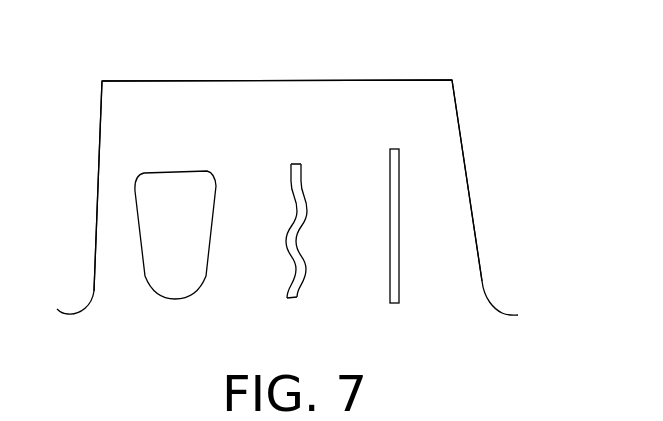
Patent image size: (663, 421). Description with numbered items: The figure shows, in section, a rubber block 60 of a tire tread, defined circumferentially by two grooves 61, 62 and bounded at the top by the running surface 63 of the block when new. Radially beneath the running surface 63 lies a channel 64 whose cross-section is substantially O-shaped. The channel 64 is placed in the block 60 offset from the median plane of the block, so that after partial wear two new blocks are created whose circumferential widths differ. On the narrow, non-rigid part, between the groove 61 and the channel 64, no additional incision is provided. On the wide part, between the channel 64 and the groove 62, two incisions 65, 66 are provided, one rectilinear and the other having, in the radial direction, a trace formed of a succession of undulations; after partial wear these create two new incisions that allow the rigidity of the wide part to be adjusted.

The rubber block 60 is at (172, 63).
The groove 61 is at (80, 185).
The groove 62 is at (507, 165).
The running surface 63 is at (360, 75).
The channel 64 is at (180, 282).
The incision 65 is at (300, 285).
The incision 66 is at (395, 263).